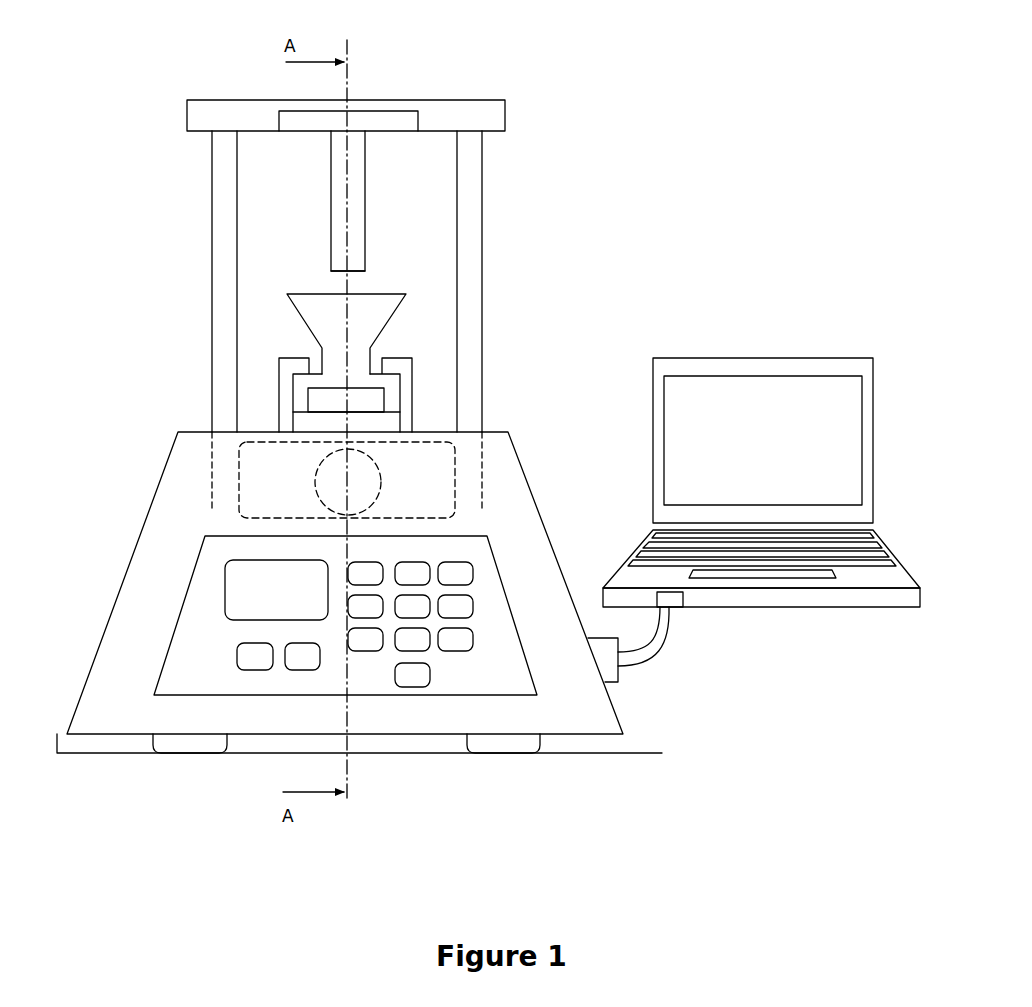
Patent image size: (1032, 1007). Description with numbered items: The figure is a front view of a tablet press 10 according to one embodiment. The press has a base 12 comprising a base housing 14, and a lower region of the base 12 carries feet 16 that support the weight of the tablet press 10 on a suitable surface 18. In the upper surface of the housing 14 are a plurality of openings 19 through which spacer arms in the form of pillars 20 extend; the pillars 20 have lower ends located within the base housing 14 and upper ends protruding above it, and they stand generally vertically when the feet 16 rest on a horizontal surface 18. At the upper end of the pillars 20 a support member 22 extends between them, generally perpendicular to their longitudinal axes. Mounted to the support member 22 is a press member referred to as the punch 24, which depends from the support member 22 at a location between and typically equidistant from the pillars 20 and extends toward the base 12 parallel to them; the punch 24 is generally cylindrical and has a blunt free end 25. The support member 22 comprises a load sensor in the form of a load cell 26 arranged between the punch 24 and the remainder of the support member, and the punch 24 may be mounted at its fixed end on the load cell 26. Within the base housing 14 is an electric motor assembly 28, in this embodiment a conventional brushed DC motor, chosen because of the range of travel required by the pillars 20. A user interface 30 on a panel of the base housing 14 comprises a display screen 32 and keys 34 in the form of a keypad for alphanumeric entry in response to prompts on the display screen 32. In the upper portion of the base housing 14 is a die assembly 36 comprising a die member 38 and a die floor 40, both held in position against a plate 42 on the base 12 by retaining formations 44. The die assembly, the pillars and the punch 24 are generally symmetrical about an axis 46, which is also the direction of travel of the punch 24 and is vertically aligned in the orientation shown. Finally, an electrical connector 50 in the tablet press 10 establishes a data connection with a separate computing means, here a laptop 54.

The tablet press 10 is at (703, 110).
The base 12 is at (152, 458).
The base housing 14 is at (173, 525).
The feet 16 is at (180, 757).
The surface 18 is at (57, 734).
The openings 19 is at (208, 458).
The pillars 20 is at (212, 380).
The support member 22 is at (490, 116).
The punch 24 is at (360, 155).
The free end 25 is at (360, 273).
The load cell 26 is at (398, 118).
The electric motor assembly 28 is at (435, 474).
The user interface 30 is at (513, 680).
The display screen 32 is at (237, 595).
The keys 34 is at (412, 682).
The die assembly 36 is at (268, 270).
The die member 38 is at (318, 318).
The die floor 40 is at (307, 400).
The plate 42 is at (383, 425).
The retaining formations 44 is at (413, 366).
The axis 46 is at (347, 90).
The electrical connector 50 is at (655, 645).
The laptop 54 is at (755, 357).